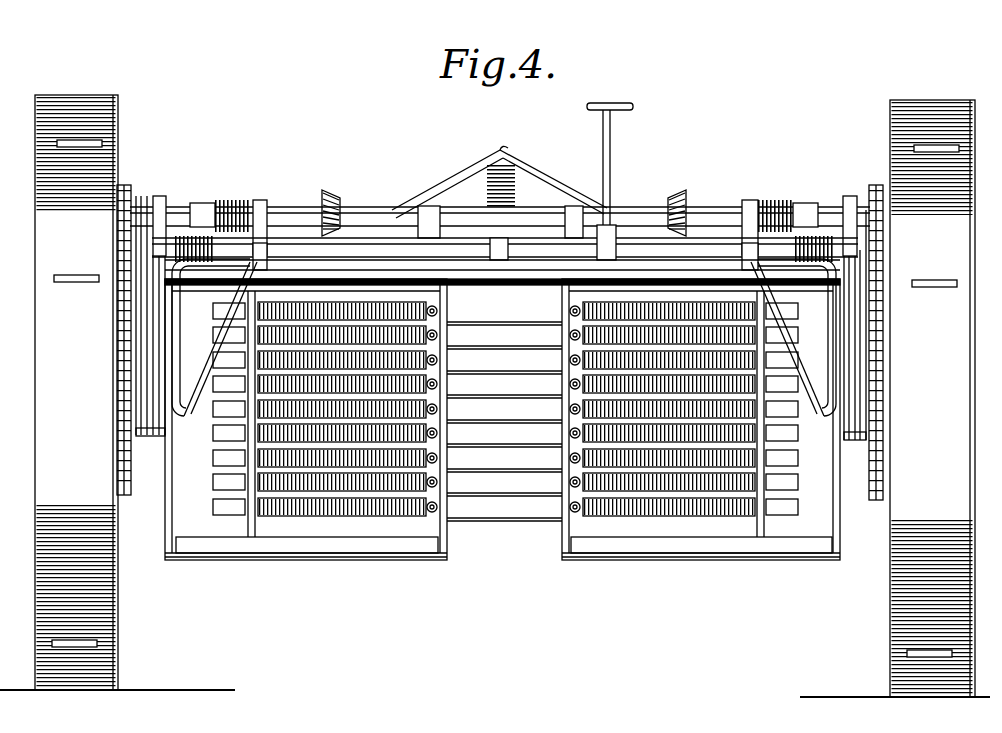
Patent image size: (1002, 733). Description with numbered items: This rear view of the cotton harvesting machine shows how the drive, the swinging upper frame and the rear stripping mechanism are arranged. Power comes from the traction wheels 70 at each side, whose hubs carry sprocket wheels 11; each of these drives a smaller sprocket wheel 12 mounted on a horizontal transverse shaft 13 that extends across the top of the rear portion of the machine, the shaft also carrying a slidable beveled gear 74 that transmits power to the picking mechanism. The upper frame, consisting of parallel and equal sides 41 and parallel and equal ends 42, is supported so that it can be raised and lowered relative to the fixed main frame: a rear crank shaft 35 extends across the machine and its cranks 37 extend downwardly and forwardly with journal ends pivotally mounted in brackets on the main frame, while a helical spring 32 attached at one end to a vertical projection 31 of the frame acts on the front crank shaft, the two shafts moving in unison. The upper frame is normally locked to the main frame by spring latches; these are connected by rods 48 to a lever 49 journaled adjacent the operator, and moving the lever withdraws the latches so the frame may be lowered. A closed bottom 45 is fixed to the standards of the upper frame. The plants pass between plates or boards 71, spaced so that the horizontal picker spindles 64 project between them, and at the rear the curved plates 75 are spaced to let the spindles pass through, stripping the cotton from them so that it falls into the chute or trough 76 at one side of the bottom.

The posts 70 is at (495, 396).
The sprocket wheel 11 is at (120, 366).
The smaller sprocket wheel 12 is at (135, 200).
The horizontal transverse shaft 13 is at (360, 218).
The bevel gears 74 is at (330, 196).
The rod 48 is at (276, 250).
The vertical projection 31 is at (522, 166).
The helical spring 32 is at (515, 190).
The lever 49 is at (610, 172).
The crank shaft 35 is at (545, 256).
The end 42 is at (488, 266).
The crank 37 is at (214, 292).
The side 41 is at (165, 522).
The bottom 45 is at (320, 555).
The chute or trough 76 is at (208, 555).
The curved plate 75 is at (368, 455).
The picker spindle 64 is at (538, 326).
The plate or board 71 is at (568, 510).